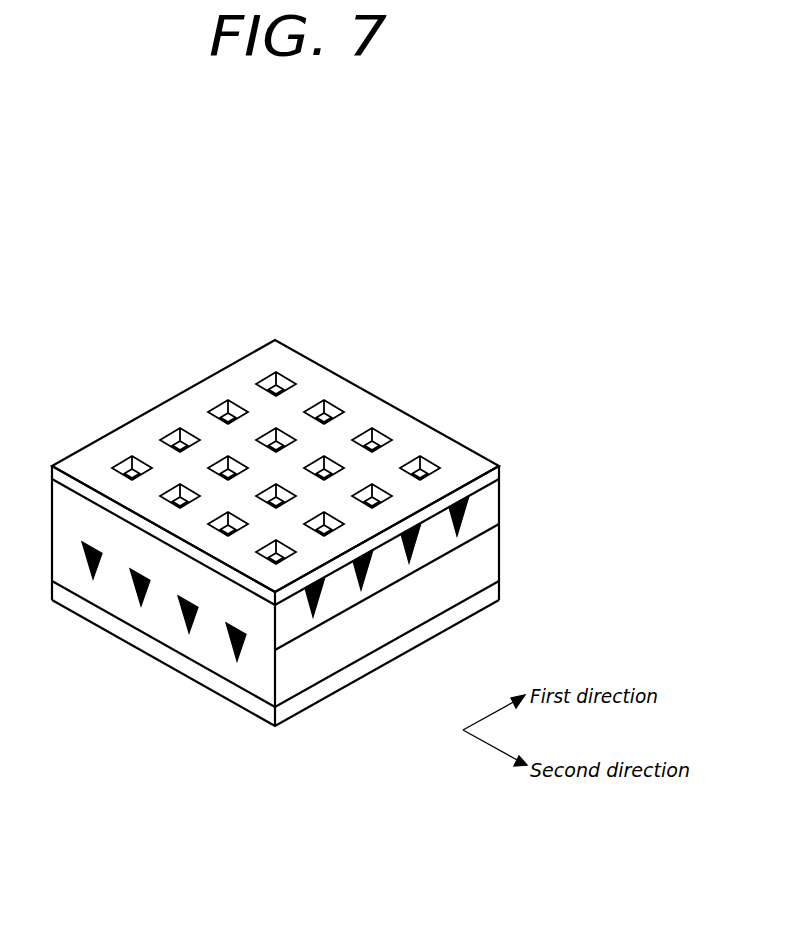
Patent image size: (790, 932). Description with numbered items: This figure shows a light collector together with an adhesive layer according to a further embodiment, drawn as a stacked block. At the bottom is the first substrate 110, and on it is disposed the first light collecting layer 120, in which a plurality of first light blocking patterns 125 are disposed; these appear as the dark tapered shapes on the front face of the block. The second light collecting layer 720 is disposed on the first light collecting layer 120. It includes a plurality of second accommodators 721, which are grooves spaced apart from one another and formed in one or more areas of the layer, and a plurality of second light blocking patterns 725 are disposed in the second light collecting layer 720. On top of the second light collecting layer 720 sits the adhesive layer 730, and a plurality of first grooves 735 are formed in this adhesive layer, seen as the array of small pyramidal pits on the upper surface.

The first substrate 110 is at (490, 592).
The first light collecting layer 120 is at (487, 558).
The first light blocking patterns 125 is at (228, 646).
The second light collecting layer 720 is at (485, 525).
The second accommodators 721 is at (303, 607).
The second light blocking patterns 725 is at (468, 512).
The adhesive layer 730 is at (460, 458).
The first grooves 735 is at (130, 461).